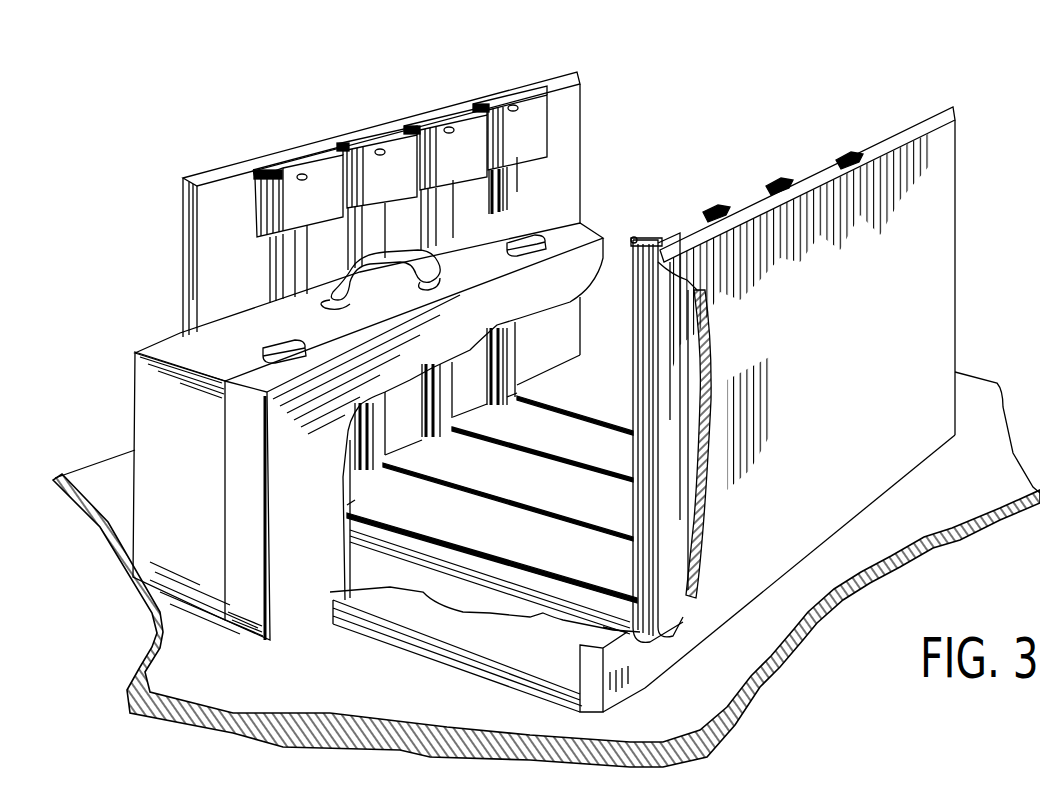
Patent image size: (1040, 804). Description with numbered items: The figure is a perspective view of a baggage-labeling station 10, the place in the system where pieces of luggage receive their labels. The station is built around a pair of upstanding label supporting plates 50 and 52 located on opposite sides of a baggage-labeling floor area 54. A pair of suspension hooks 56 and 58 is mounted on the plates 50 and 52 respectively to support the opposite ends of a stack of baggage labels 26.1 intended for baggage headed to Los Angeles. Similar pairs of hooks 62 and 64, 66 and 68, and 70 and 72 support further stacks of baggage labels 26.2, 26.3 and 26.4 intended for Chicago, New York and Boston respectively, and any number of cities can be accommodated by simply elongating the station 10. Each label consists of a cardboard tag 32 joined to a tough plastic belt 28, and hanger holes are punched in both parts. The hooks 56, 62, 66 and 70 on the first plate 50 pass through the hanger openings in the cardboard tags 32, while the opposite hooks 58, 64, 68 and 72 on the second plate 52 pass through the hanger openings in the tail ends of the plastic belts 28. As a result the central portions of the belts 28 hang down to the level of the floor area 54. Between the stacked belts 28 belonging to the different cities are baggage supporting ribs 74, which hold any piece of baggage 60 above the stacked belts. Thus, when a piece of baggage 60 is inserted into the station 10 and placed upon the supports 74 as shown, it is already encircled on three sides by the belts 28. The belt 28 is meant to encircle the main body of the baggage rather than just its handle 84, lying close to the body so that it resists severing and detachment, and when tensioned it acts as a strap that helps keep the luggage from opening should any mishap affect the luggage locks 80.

The baggage labeling station 10 is at (168, 164).
The stack of baggage labels 26.1 is at (270, 256).
The stack of baggage labels 26.2 is at (364, 230).
The stack of baggage labels 26.3 is at (441, 216).
The stack of baggage labels 26.4 is at (508, 200).
The plastic belt 28 is at (700, 588).
The cardboard tag 32 is at (263, 184).
The label supporting plate 50 is at (583, 84).
The label supporting plate 52 is at (958, 128).
The baggage-labeling floor area 54 is at (456, 659).
The suspension hook 56 is at (300, 170).
The suspension hook 58 is at (637, 236).
The baggage 60 is at (134, 378).
The hook 62 is at (377, 147).
The hook 64 is at (712, 205).
The hook 66 is at (447, 126).
The hook 68 is at (775, 180).
The hook 70 is at (513, 104).
The hook 72 is at (845, 155).
The baggage supporting ribs 74 is at (588, 398).
The luggage locks 80 is at (262, 348).
The handle 84 is at (340, 303).